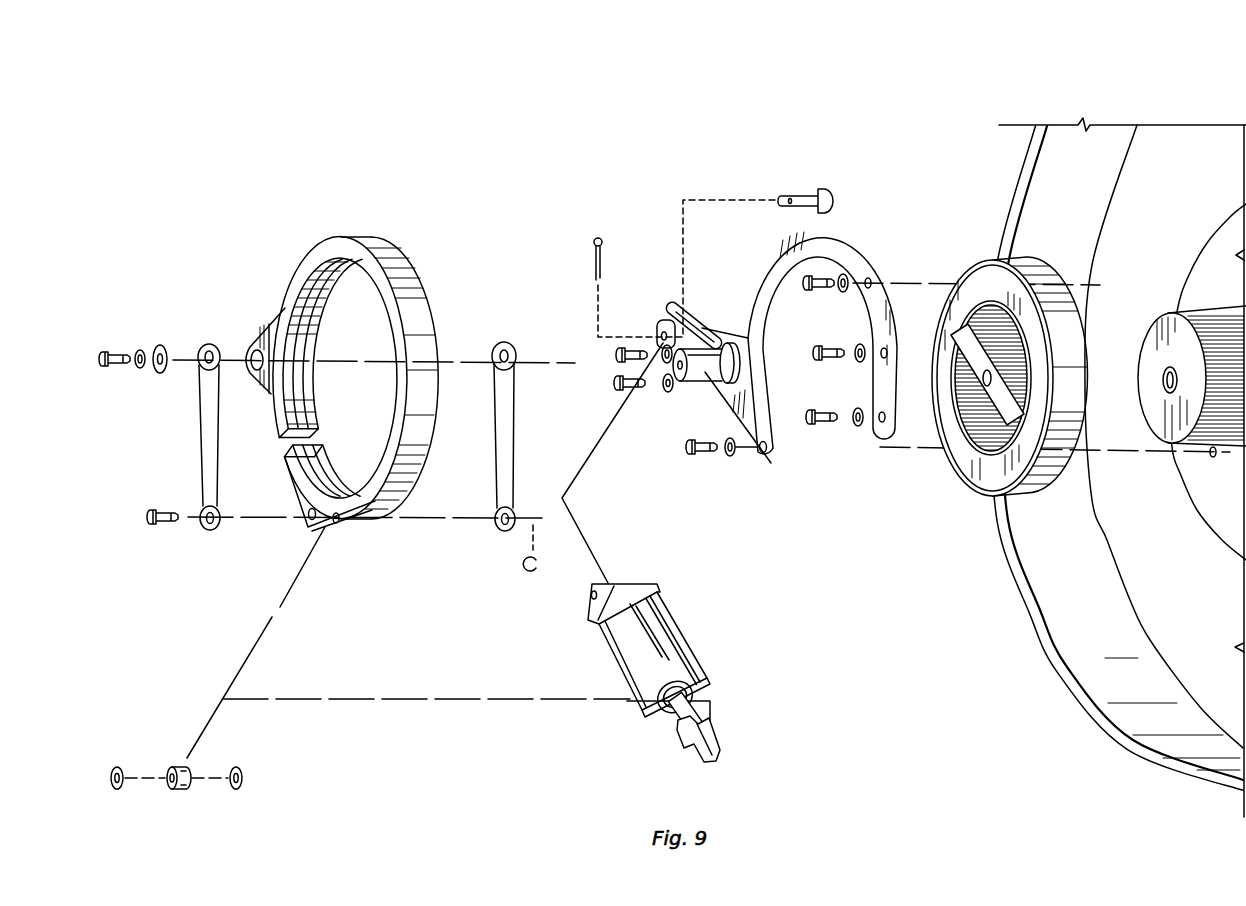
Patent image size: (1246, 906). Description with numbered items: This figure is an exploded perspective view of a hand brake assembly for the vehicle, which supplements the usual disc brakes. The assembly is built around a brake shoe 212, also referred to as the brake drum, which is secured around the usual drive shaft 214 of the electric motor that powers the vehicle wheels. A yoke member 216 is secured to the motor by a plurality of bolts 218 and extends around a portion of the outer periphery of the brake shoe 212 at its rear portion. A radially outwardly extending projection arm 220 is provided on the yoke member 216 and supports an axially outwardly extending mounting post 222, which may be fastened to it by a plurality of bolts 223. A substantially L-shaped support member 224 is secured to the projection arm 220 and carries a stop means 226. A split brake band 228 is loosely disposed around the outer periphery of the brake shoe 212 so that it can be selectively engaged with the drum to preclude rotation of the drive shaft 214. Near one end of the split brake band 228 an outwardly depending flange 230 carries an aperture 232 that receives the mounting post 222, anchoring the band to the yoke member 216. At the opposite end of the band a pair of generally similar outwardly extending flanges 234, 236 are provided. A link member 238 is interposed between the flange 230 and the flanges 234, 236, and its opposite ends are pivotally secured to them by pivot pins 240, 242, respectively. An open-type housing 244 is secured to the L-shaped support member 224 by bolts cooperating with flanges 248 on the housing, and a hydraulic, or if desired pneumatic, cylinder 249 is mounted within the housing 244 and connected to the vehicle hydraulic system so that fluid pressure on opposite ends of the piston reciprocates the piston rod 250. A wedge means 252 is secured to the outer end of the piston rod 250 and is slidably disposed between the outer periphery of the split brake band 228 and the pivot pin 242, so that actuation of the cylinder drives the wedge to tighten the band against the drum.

The brake shoe 212 is at (985, 493).
The drive shaft 214 is at (1157, 427).
The yoke member 216 is at (752, 434).
The bolts 218 is at (827, 423).
The projection arm 220 is at (720, 331).
The mounting post 222 is at (706, 372).
The bolts 223 is at (615, 384).
The L-shaped support member 224 is at (662, 327).
The stop means 226 is at (672, 308).
The split brake band 228 is at (408, 468).
The flange 230 is at (262, 330).
The aperture 232 is at (248, 353).
The flange 234 is at (307, 520).
The flange 236 is at (342, 518).
The link member 238 is at (205, 451).
The pivot pin 240 is at (118, 349).
The pivot pin 242 is at (160, 527).
The open-type housing 244 is at (623, 650).
The flanges 248 is at (591, 588).
The hydraulic cylinder 249 is at (657, 623).
The piston rod 250 is at (677, 717).
The wedge means 252 is at (722, 752).